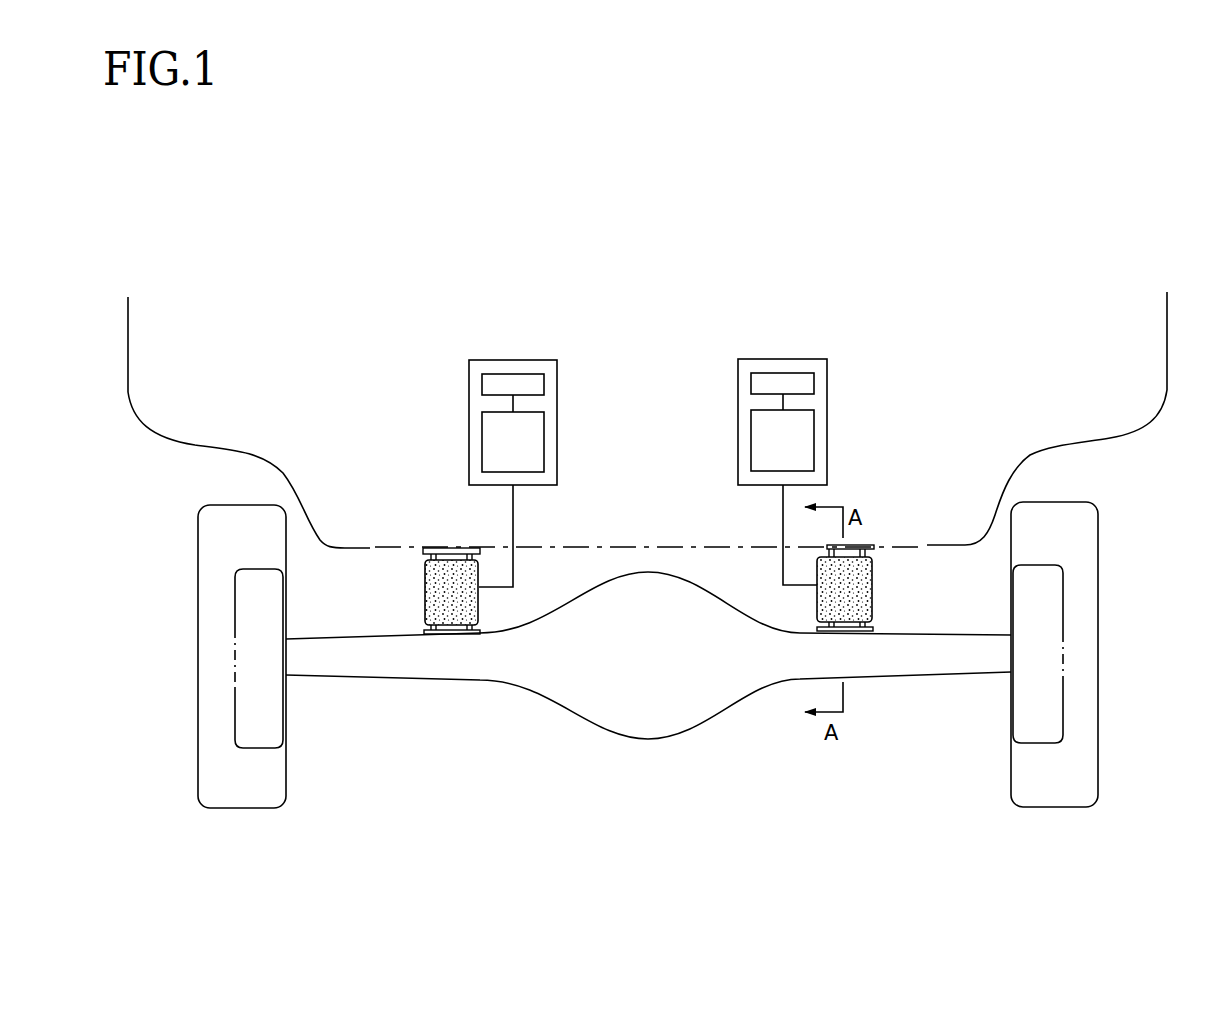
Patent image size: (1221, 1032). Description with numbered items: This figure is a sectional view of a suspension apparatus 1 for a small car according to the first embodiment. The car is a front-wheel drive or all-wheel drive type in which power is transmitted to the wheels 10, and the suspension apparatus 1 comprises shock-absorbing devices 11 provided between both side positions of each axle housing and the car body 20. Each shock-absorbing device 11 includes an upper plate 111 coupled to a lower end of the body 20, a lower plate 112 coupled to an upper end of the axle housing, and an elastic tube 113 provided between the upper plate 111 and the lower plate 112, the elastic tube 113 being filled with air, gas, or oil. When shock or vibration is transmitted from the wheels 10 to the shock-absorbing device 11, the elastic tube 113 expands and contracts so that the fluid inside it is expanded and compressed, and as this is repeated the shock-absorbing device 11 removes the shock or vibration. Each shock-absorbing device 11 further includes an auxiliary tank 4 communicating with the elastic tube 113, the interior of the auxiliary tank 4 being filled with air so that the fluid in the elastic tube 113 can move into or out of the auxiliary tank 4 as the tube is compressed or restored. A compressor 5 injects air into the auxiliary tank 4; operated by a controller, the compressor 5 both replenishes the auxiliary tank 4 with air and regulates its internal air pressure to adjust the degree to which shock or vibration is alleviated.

The suspension apparatus 1 is at (777, 689).
The auxiliary tank 4 is at (482, 438).
The compressor 5 is at (482, 378).
The wheels 10 is at (233, 800).
The shock-absorbing device 11 is at (777, 689).
The car body 20 is at (980, 488).
The upper plate 111 is at (425, 550).
The lower plate 112 is at (437, 637).
The elastic tube 113 is at (427, 602).